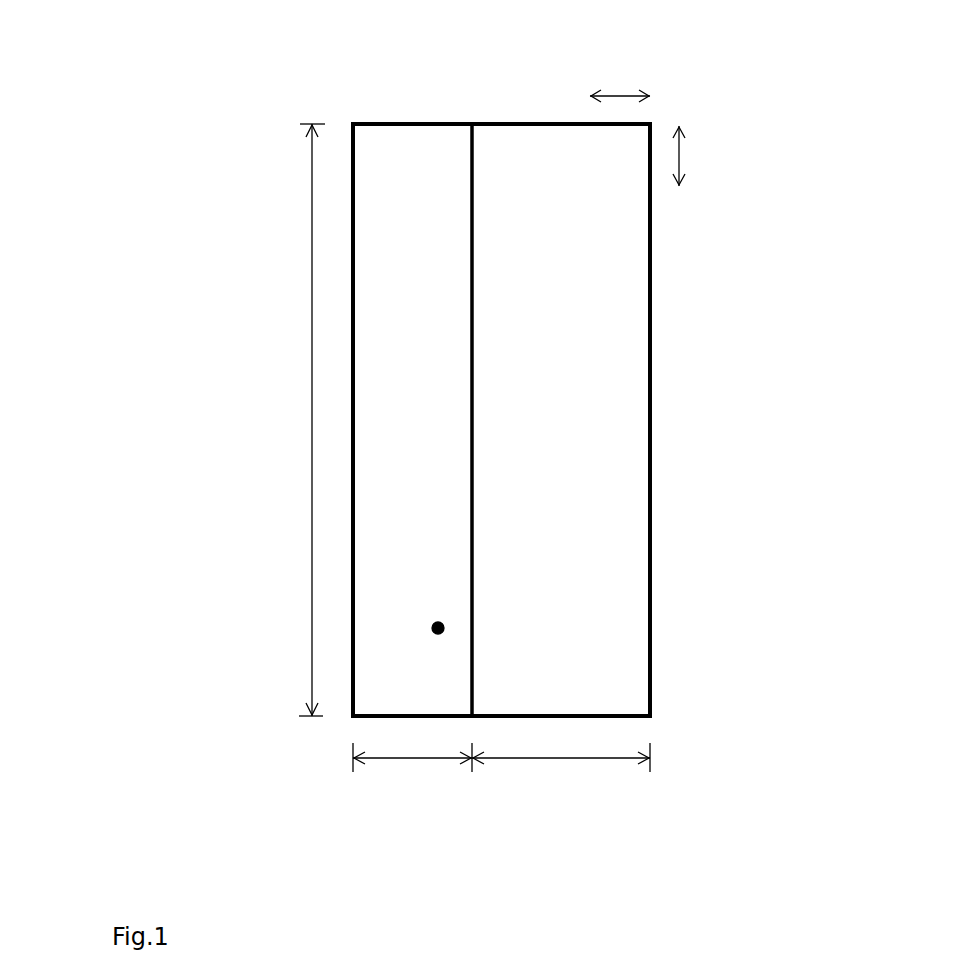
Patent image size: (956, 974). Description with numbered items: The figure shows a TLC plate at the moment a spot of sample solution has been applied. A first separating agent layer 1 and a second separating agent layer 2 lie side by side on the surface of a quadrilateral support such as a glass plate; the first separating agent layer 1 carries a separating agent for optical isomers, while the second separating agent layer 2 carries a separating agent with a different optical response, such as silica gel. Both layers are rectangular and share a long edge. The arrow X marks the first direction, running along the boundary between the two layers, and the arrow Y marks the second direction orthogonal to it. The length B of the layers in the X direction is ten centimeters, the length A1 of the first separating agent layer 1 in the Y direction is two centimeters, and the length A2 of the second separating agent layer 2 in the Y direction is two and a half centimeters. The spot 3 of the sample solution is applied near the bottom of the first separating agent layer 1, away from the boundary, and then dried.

The first separating agent layer 1 is at (400, 124).
The second separating agent layer 2 is at (652, 424).
The spot 3 is at (432, 628).
The length of the first and second separating agent layers in the X direction B is at (312, 398).
The length of the first separating agent layer in the Y direction A1 is at (418, 760).
The length of the second separating agent layer in the Y direction A2 is at (551, 760).
The arrow X is at (680, 157).
The arrow Y is at (627, 96).